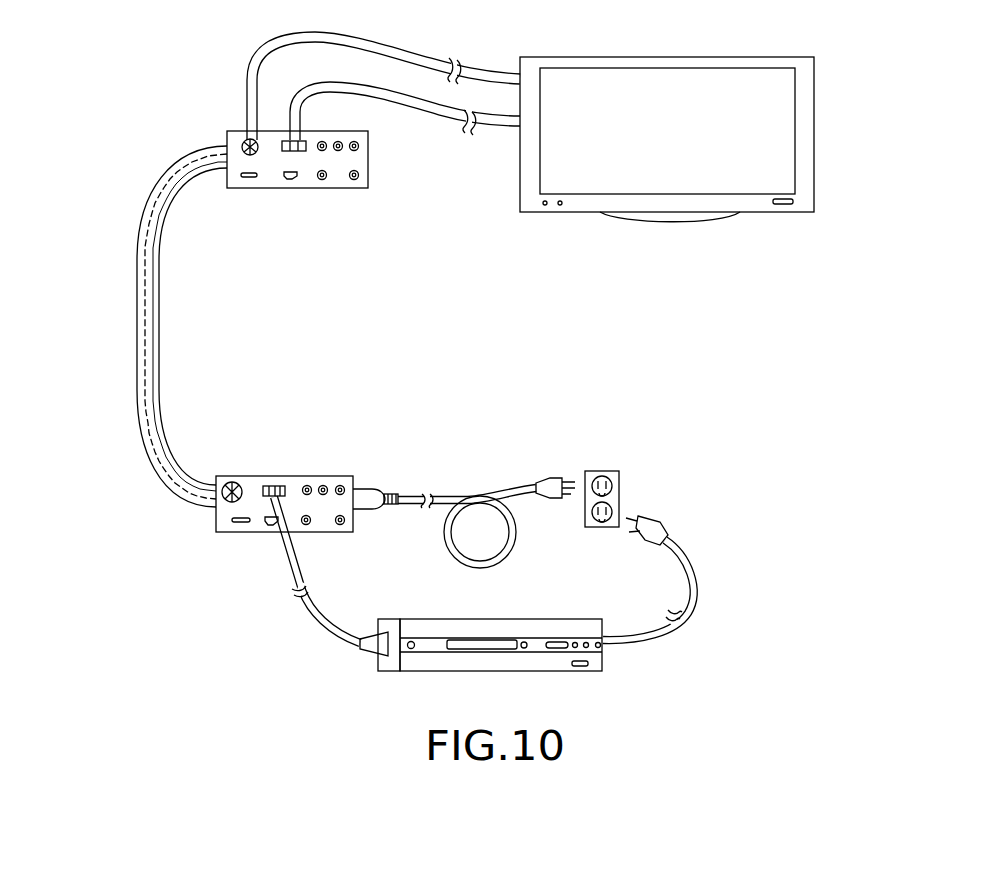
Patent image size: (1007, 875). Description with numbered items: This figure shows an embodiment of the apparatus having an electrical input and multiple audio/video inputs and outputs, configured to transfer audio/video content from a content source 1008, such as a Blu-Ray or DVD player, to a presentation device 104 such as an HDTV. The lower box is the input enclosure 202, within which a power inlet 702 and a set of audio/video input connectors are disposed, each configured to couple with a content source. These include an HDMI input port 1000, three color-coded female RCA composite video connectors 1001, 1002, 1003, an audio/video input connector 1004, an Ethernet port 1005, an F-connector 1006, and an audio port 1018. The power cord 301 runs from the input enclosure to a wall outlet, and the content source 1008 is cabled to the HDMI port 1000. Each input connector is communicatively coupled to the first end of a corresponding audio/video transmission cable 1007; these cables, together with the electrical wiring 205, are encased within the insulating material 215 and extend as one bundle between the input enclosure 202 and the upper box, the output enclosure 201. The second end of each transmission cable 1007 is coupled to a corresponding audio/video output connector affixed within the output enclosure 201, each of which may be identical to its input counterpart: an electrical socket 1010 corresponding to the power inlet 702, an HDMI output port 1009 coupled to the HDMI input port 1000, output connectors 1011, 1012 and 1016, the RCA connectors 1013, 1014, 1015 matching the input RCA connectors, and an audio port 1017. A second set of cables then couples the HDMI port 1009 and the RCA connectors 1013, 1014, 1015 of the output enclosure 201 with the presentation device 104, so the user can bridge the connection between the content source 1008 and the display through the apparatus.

The presentation device 104 is at (748, 57).
The output enclosure 201 is at (233, 167).
The insulating material 215 is at (138, 264).
The electrical wiring 205 is at (143, 310).
The audio/video transmission cable 1007 is at (150, 330).
The electrical socket 1010 is at (248, 139).
The HDMI output port 1009 is at (300, 139).
The audio/video output connector 1011 is at (247, 178).
The audio/video output connector 1012 is at (289, 180).
The RCA connector 1013 is at (325, 151).
The RCA connector 1014 is at (342, 150).
The RCA connector 1015 is at (359, 146).
The audio/video output connector 1016 is at (322, 180).
The audio port 1017 is at (358, 177).
The power inlet 702 is at (238, 481).
The HDMI input port 1000 is at (276, 483).
The composite video connector 1001 is at (309, 485).
The composite video connector 1002 is at (325, 485).
The composite video connector 1003 is at (343, 485).
The audio/video input connector 1004 is at (240, 524).
The Ethernet port 1005 is at (275, 527).
The F-connector 1006 is at (308, 525).
The audio port 1018 is at (346, 525).
The input enclosure 202 is at (355, 503).
The power cord 301 is at (486, 492).
The content source 1008 is at (604, 664).